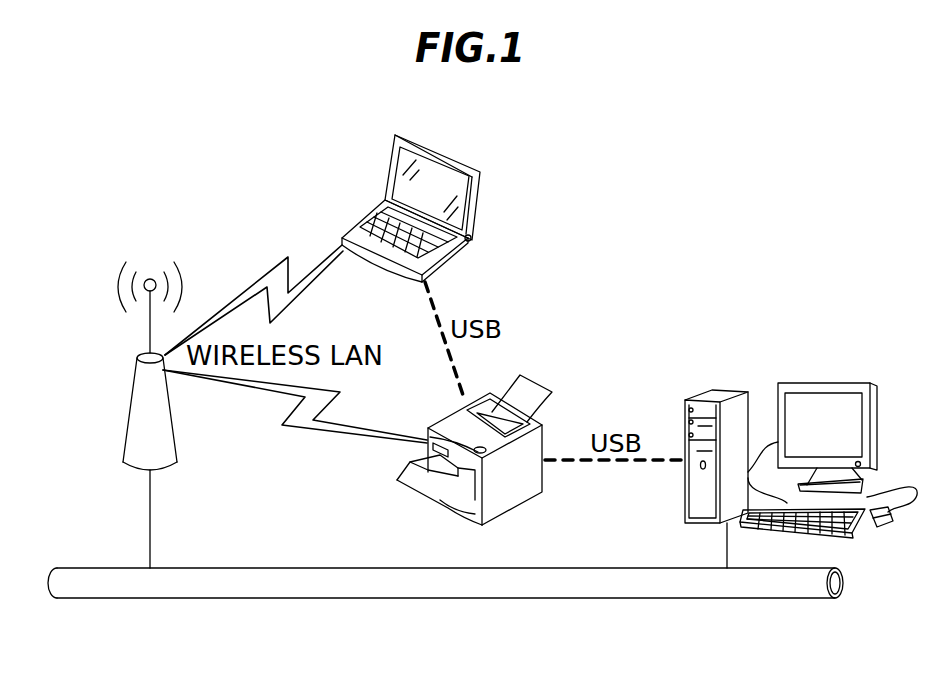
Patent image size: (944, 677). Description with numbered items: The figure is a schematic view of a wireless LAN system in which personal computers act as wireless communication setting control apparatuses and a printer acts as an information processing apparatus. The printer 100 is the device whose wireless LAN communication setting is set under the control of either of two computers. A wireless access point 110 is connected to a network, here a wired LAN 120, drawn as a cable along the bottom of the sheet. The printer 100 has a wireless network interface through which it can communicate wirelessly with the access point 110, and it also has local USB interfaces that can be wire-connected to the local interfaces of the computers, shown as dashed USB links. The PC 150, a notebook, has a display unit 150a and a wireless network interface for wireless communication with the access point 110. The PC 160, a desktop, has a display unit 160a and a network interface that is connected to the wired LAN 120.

The printer 100 is at (558, 368).
The wireless access point 110 is at (170, 470).
The wired LAN 120 is at (430, 599).
The PC 150 is at (443, 204).
The display unit 150a is at (443, 177).
The PC 160 is at (728, 392).
The display unit 160a is at (825, 383).